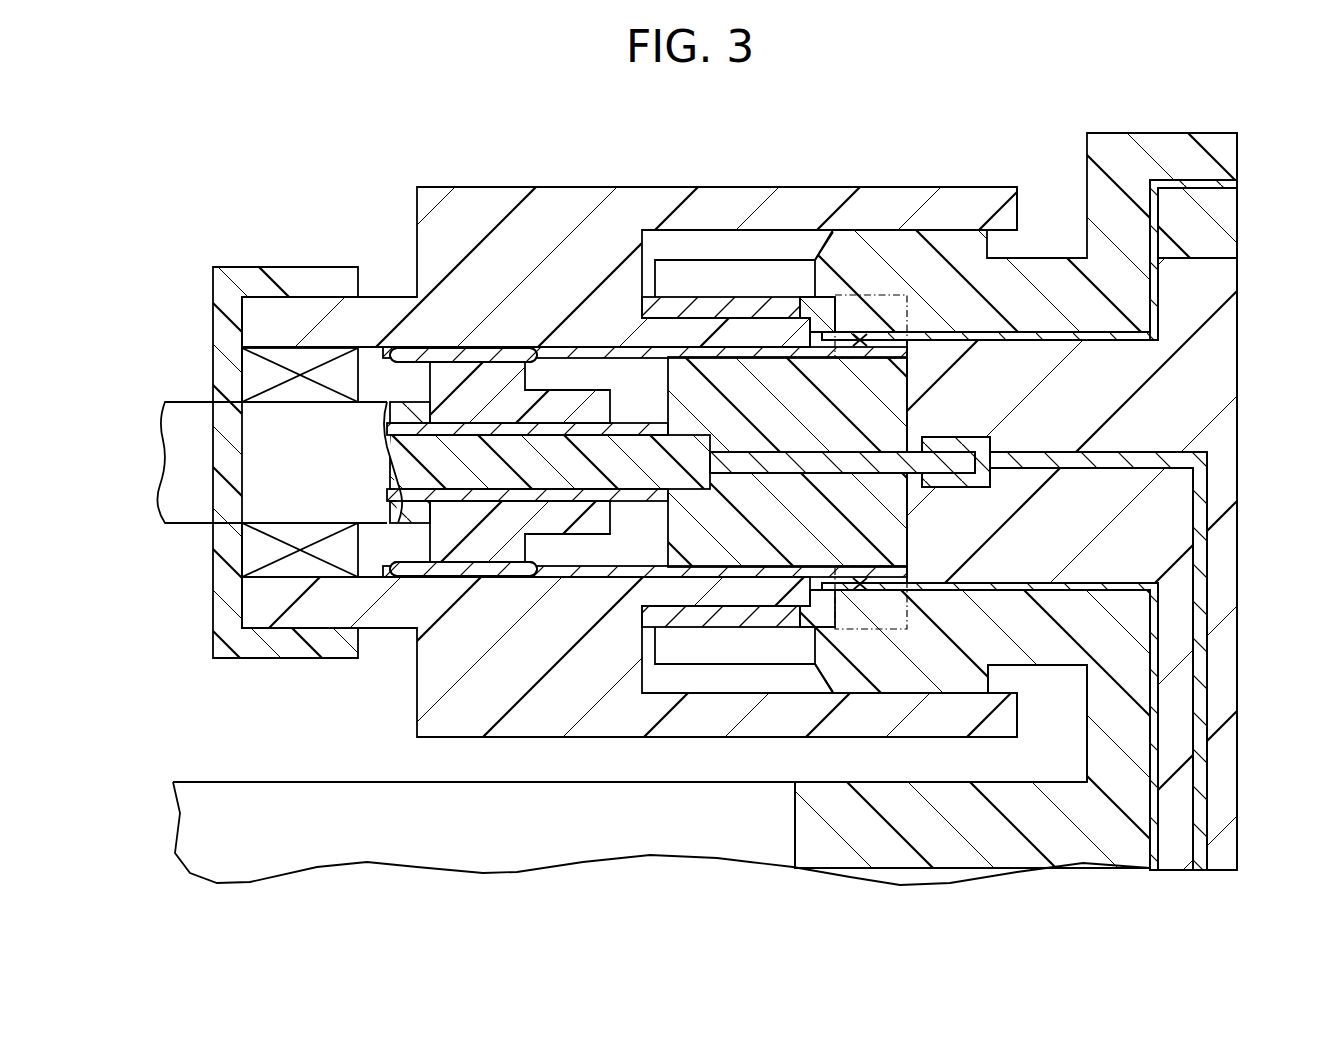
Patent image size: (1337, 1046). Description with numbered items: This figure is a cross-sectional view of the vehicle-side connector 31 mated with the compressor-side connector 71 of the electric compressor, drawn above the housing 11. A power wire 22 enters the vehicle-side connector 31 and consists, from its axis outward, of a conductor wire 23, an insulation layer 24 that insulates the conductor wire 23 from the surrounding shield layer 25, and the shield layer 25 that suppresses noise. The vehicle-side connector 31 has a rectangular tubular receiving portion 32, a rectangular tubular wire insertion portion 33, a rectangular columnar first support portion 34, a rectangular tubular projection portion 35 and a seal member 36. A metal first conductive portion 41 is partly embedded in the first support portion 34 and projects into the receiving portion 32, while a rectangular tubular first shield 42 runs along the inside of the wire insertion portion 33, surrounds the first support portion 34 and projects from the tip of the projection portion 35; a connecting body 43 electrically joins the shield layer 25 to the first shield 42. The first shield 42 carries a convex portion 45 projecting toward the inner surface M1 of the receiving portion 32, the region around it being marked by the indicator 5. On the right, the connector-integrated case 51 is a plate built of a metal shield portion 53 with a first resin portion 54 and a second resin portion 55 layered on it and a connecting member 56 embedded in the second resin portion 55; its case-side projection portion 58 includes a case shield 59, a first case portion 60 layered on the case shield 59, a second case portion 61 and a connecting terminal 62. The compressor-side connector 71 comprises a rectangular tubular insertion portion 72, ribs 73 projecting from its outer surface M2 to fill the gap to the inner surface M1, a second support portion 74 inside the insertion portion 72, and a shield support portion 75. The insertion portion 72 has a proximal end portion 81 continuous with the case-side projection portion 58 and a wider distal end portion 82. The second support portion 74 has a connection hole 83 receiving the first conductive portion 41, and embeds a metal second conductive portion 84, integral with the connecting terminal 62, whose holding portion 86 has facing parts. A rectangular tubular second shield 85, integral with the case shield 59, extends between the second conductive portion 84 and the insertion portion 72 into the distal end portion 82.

The seal section 5 is at (841, 141).
The housing 11 is at (249, 782).
The power wire 22 is at (187, 534).
The conductor wire 23 is at (393, 457).
The insulation layer 24 is at (385, 427).
The shield layer 25 is at (410, 497).
The vehicle-side connector 31 is at (470, 174).
The receiving portion 32 is at (720, 188).
The wire insertion portion 33 is at (553, 188).
The first support portion 34 is at (665, 371).
The projection portion 35 is at (660, 330).
The seal member 36 is at (690, 300).
The first conductive portion 41 is at (700, 500).
The first shield 42 is at (530, 361).
The connecting body 43 is at (440, 348).
The convex portion 45 is at (878, 302).
The connector-integrated case 51 is at (1249, 158).
The shield portion 53 is at (1160, 768).
The first resin portion 54 is at (1195, 131).
The second resin portion 55 is at (1240, 344).
The connecting member 56 is at (1205, 558).
The case-side projection portion 58 is at (1240, 223).
The case shield 59 is at (1160, 830).
The first case portion 60 is at (1135, 855).
The second case portion 61 is at (1225, 714).
The connecting terminal 62 is at (1200, 668).
The compressor-side connector 71 is at (1030, 247).
The insertion portion 72 is at (1000, 230).
The rib 73 is at (892, 232).
The second support portion 74 is at (1017, 578).
The shield support portion 75 is at (852, 290).
The proximal end portion 81 is at (1058, 272).
The distal end portion 82 is at (755, 662).
The connection hole 83 is at (880, 452).
The second conductive portion 84 is at (1055, 452).
The second shield 85 is at (1020, 342).
The holding portion 86 is at (950, 489).
The inner surface of the receiving portion M1 is at (790, 238).
The outer surface of the insertion portion M2 is at (758, 262).